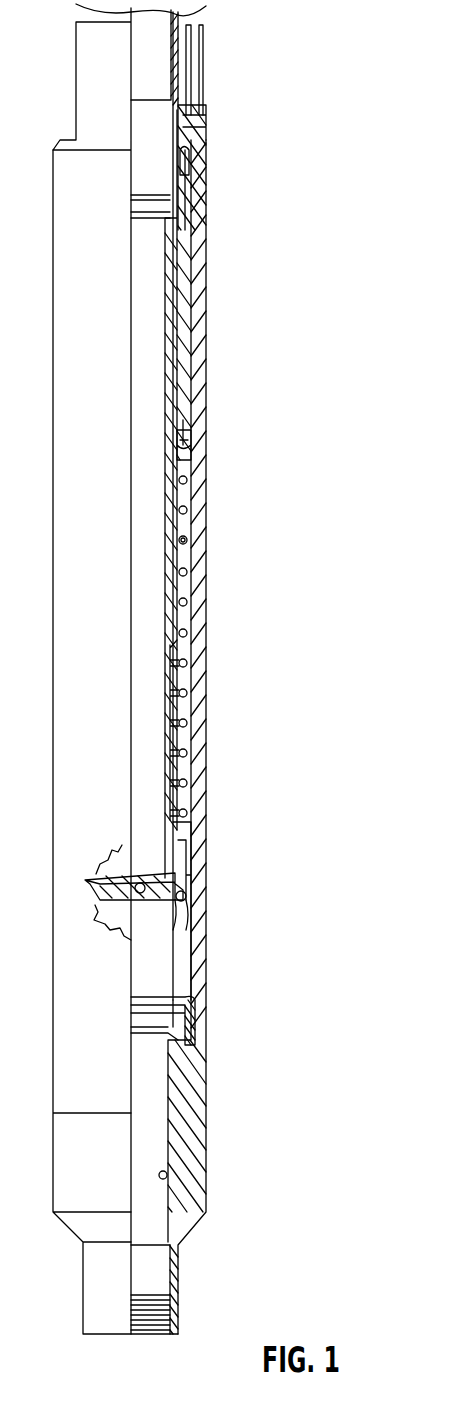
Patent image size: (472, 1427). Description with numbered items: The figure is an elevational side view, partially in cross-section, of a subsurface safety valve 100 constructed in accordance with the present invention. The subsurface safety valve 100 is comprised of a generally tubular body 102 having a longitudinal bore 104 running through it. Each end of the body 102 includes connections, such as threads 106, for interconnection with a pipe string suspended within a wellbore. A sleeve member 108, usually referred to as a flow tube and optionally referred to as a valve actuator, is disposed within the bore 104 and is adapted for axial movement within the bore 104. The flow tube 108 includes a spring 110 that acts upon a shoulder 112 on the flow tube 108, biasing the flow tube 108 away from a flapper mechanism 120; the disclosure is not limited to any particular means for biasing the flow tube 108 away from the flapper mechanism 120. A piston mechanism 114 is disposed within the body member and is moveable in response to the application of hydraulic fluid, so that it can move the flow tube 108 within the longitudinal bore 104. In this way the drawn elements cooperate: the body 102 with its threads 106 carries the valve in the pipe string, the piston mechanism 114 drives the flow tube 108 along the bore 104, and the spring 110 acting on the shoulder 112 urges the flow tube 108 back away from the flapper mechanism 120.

The subsurface safety valve 100 is at (277, 479).
The tubular body 102 is at (198, 680).
The longitudinal bore 104 is at (140, 632).
The threads 106 is at (150, 1318).
The sleeve member 108 is at (183, 588).
The spring 110 is at (196, 730).
The shoulder 112 is at (193, 443).
The piston mechanism 114 is at (208, 146).
The flapper mechanism 120 is at (265, 893).